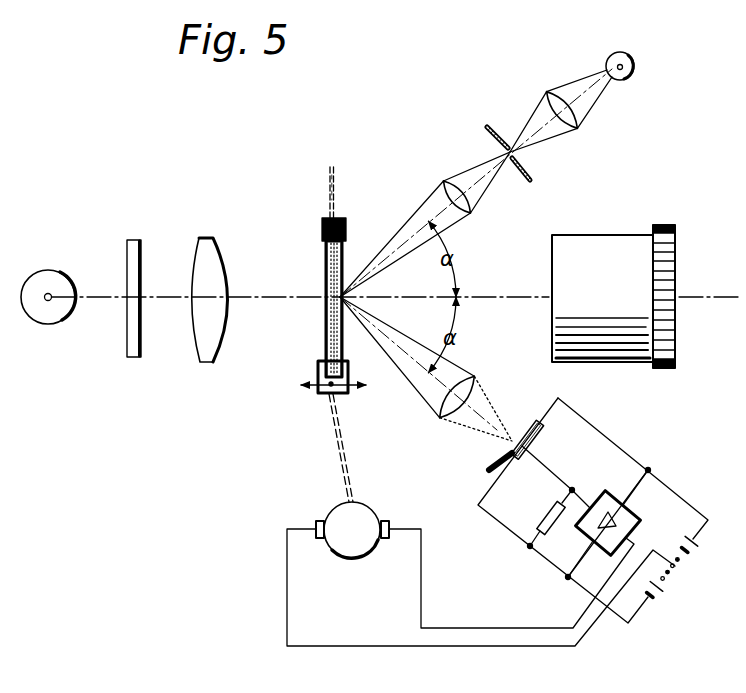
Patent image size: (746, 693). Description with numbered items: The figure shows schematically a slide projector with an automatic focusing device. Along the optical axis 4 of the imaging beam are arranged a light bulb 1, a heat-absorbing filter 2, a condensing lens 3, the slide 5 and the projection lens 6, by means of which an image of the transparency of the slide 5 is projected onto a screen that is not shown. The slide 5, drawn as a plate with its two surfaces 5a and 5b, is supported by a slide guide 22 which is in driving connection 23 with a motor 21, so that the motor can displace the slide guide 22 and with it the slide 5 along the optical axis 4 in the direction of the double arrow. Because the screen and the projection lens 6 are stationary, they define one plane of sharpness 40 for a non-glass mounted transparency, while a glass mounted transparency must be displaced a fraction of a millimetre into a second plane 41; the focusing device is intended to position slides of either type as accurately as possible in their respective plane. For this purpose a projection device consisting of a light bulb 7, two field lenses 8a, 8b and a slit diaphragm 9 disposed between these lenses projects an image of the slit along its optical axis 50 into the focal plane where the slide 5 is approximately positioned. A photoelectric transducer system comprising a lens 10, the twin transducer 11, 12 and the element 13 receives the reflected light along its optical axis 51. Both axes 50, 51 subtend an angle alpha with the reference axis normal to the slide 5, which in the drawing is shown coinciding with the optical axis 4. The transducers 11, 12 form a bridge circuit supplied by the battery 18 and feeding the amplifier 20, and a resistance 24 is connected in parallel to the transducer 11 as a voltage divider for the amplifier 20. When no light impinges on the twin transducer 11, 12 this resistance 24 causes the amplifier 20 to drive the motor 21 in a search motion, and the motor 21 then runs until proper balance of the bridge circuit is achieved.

The light bulb 1 is at (57, 323).
The heat-absorbing filter 2 is at (137, 359).
The condensing lens 3 is at (212, 360).
The optical axis 4 is at (497, 298).
The slide 5 is at (320, 240).
The surface of slide 5a is at (325, 266).
The surface of slide 5b is at (346, 249).
The projection lens 6 is at (603, 252).
The light bulb 7 is at (609, 58).
The field lens 8a is at (573, 115).
The field lens 8b is at (443, 188).
The slit diaphragm 9 is at (495, 128).
The lens of photoelectric transducer system 10 is at (447, 404).
The transducer 11 is at (518, 468).
The transducer 12 is at (540, 437).
The element of photoelectric transducer system 13 is at (490, 467).
The battery 18 is at (681, 575).
The amplifier 20 is at (596, 508).
The motor 21 is at (352, 546).
The slide guide 22 is at (326, 393).
The driving connection 23 is at (341, 470).
The resistance 24 is at (557, 532).
The plane of sharpness 40 is at (339, 181).
The plane 41 is at (330, 180).
The optical axis of projection device 50 is at (403, 240).
The optical axis of photoelectric transducer system 51 is at (398, 352).